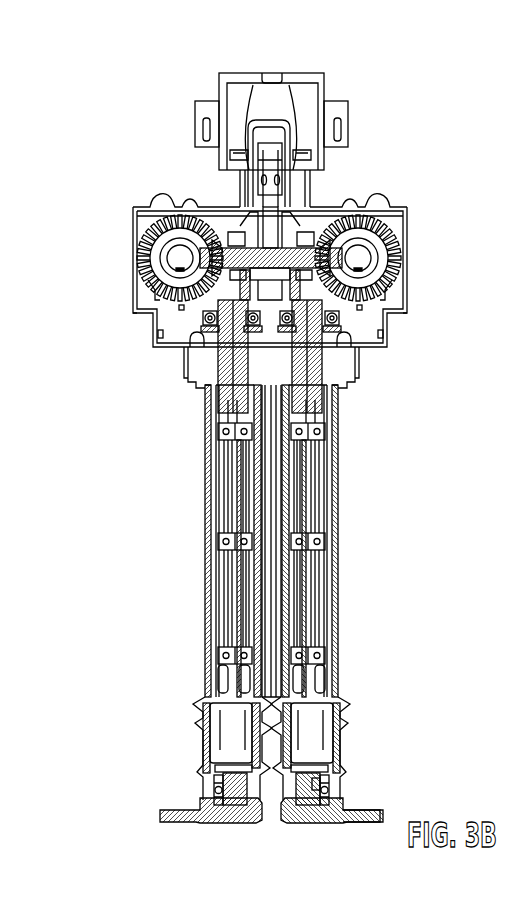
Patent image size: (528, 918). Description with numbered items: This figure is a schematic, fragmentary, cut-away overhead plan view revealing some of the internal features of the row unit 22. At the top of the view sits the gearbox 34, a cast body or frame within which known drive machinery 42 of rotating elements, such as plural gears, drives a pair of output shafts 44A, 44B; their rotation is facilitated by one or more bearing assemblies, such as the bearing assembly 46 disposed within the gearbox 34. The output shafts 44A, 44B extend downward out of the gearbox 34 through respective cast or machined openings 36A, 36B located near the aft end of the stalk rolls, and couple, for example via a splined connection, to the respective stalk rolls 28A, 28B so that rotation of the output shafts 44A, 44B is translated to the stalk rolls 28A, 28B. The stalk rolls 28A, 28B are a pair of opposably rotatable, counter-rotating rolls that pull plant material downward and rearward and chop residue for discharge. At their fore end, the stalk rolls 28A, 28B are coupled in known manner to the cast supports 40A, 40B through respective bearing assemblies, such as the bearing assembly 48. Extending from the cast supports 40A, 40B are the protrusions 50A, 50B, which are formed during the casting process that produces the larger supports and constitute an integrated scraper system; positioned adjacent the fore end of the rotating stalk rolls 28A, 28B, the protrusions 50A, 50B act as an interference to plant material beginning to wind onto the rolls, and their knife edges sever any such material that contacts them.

The row unit 22 is at (186, 95).
The gearbox 34 is at (150, 206).
The drive machinery 42 is at (428, 268).
The bearing assembly 46 is at (334, 346).
The output shaft 44A is at (228, 372).
The output shaft 44B is at (319, 376).
The opening 36A is at (184, 393).
The opening 36B is at (350, 402).
The stalk roll 28A is at (204, 497).
The stalk roll 28B is at (339, 533).
The bearing assembly 48 is at (316, 784).
The protrusion 50A is at (210, 804).
The protrusion 50B is at (328, 805).
The cast support 40A is at (178, 826).
The cast support 40B is at (357, 812).